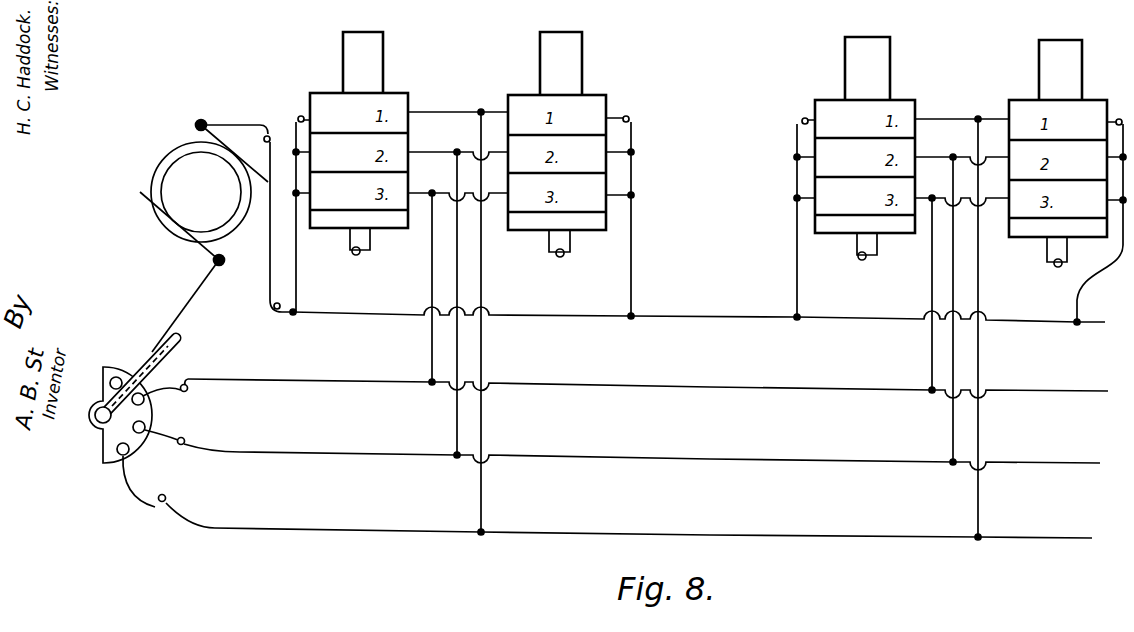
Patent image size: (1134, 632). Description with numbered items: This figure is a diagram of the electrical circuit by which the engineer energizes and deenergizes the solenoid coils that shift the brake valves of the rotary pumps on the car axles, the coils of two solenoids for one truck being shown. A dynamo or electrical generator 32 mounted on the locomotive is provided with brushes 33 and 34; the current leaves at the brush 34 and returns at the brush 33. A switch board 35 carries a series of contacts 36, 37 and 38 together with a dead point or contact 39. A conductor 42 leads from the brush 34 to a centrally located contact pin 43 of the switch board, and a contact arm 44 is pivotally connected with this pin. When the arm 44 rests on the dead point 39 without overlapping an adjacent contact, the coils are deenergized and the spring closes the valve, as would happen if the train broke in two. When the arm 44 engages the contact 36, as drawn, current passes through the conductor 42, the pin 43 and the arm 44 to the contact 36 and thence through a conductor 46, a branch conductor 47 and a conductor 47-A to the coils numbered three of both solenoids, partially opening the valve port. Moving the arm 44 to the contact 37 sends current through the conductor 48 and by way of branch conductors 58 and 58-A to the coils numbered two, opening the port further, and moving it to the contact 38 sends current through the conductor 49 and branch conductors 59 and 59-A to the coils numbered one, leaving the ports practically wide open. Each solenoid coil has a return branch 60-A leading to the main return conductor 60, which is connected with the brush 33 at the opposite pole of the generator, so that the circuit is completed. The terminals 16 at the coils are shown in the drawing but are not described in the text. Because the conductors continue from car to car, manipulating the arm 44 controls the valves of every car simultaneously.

The coil terminal 16 is at (350, 248).
The dynamo or electrical generator 32 is at (200, 185).
The brush 33 is at (214, 132).
The brush 34 is at (203, 248).
The switch board 35 is at (146, 414).
The contact 36 is at (148, 401).
The contact 37 is at (146, 431).
The contact 38 is at (120, 456).
The dead point or contact 39 is at (101, 372).
The conductor 42 is at (204, 291).
The contact pin 43 is at (94, 432).
The contact arm 44 is at (134, 370).
The conductor 46 is at (325, 378).
The branch conductor 47 is at (431, 338).
The conductor 47-A is at (453, 200).
The conductor 48 is at (342, 452).
The conductor 49 is at (418, 533).
The branch conductor 58 is at (458, 345).
The branch conductor 58-A is at (432, 151).
The branch conductor 59 is at (482, 490).
The branch conductor 59-A is at (442, 111).
The main return conductor 60 is at (690, 309).
The return branch 60-A is at (297, 300).